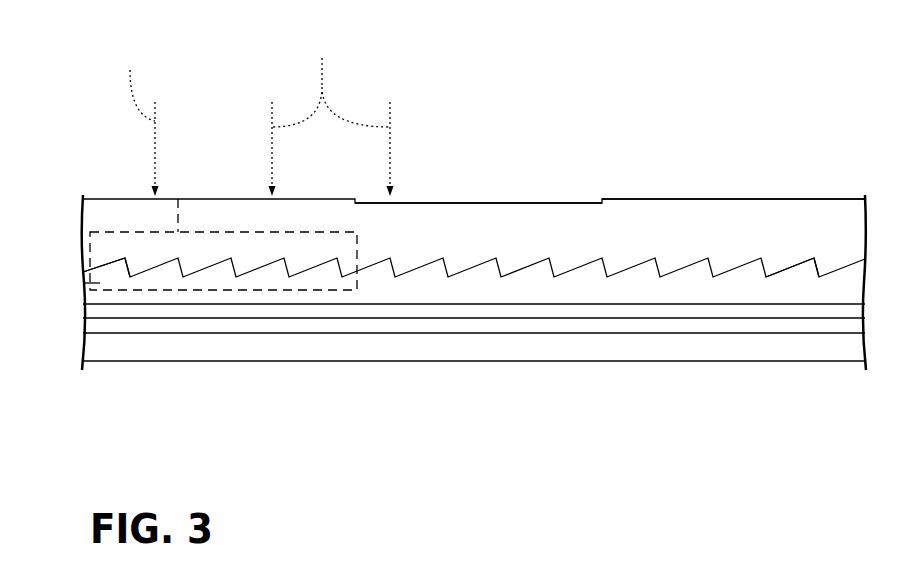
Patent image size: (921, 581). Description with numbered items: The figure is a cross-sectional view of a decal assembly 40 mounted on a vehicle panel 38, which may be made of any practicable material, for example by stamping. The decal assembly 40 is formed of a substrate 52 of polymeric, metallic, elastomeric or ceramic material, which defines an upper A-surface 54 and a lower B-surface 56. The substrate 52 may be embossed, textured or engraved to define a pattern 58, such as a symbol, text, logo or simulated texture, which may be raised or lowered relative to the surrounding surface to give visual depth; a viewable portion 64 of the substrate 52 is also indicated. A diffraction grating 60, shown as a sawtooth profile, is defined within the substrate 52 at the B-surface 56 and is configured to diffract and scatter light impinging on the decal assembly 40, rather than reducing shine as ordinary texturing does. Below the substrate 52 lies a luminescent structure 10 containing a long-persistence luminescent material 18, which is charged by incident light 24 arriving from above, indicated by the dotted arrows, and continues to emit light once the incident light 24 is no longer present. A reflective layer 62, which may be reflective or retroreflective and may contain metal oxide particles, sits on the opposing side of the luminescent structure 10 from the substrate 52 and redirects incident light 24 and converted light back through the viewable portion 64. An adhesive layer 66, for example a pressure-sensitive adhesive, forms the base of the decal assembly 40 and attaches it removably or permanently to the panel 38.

The luminescent structure 10 is at (100, 283).
The long-persistence luminescent material 18 is at (80, 267).
The incident light 24 is at (259, 114).
The vehicle panel 38 is at (97, 345).
The decal assembly 40 is at (605, 128).
The substrate 52 is at (825, 228).
The A-surface 54 is at (743, 197).
The B-surface 56 is at (790, 273).
The pattern 58 is at (452, 199).
The diffraction grating 60 is at (162, 267).
The reflective layer 62 is at (95, 309).
The viewable portion 64 is at (678, 197).
The adhesive layer 66 is at (92, 323).